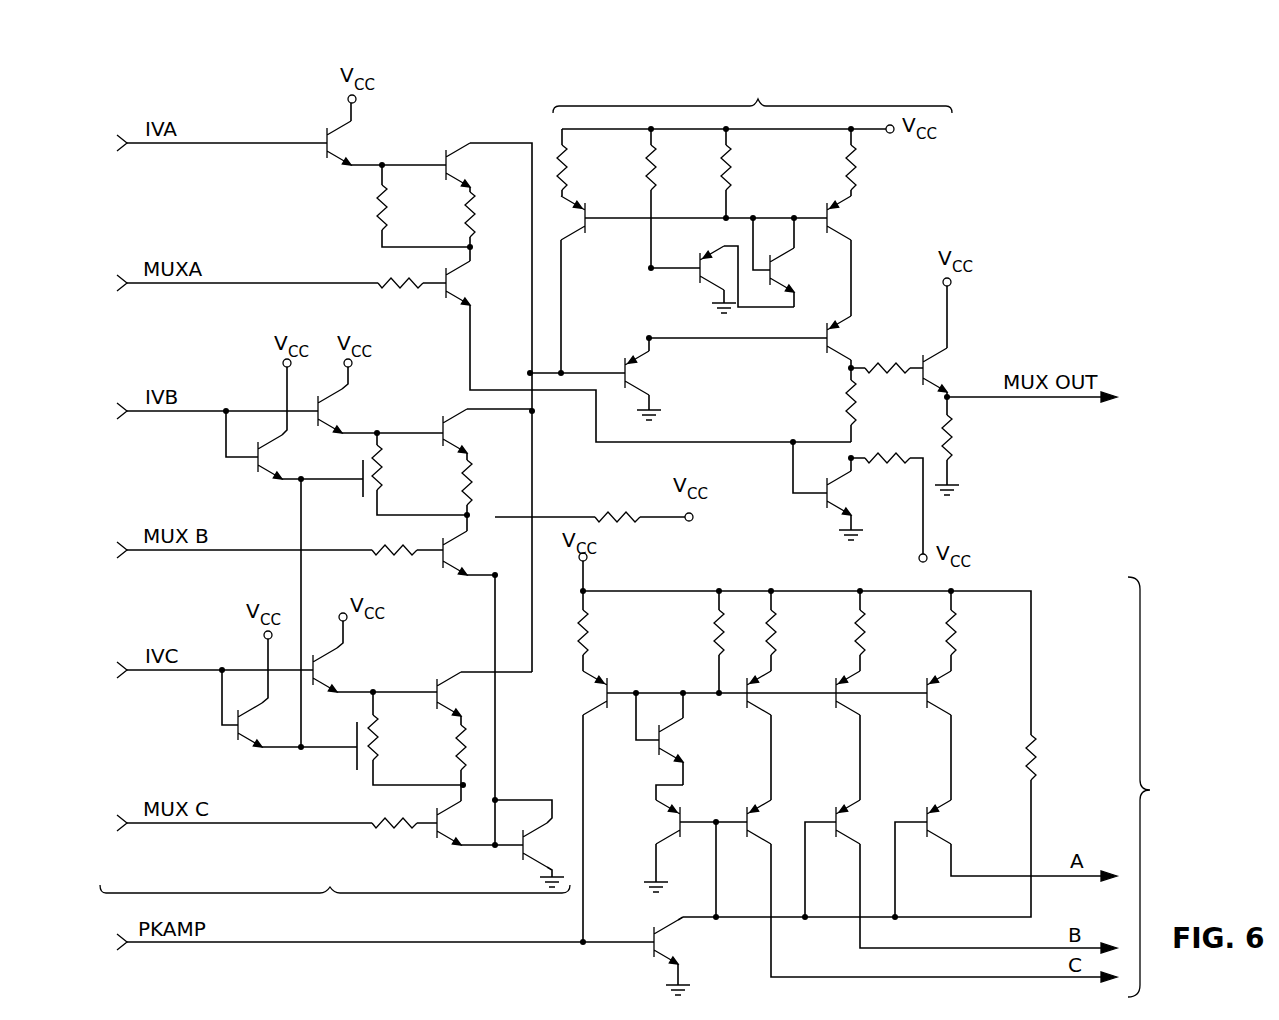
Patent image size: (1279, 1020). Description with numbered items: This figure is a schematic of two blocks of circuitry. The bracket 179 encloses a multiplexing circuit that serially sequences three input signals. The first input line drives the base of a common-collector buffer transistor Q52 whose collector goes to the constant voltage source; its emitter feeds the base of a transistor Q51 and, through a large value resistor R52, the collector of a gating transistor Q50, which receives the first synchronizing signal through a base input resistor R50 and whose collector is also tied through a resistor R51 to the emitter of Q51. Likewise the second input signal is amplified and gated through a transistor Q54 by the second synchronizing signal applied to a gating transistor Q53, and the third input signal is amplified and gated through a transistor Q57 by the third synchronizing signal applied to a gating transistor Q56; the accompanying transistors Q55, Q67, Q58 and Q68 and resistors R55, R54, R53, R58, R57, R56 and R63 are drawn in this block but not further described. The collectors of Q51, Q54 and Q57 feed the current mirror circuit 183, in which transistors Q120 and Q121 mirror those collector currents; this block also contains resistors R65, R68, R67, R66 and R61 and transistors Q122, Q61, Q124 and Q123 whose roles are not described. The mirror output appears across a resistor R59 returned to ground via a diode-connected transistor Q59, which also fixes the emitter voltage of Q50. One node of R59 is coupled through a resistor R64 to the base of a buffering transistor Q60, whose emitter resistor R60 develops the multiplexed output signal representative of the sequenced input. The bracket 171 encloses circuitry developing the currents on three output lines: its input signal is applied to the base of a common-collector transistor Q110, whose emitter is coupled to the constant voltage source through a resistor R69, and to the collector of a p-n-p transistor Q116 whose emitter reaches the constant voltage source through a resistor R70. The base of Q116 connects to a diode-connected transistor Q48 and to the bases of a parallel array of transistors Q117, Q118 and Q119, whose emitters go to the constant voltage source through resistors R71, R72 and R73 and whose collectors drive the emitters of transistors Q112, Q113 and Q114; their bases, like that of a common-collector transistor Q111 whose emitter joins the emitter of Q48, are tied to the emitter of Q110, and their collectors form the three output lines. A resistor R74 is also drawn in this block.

The buffer transistor Q52 is at (350, 139).
The transistor Q51 is at (470, 167).
The large value resistor R52 is at (386, 212).
The resistor R51 is at (474, 212).
The base input resistor R50 is at (384, 280).
The gating transistor Q50 is at (462, 286).
The current mirror circuit 183 is at (752, 92).
The resistor R65 is at (567, 168).
The resistor R68 is at (656, 168).
The resistor R67 is at (731, 168).
The resistor R66 is at (856, 168).
The transistor Q120 is at (564, 218).
The transistor Q121 is at (828, 222).
The transistor Q122 is at (697, 282).
The transistor Q61 is at (772, 272).
The transistor Q124 is at (830, 334).
The transistor Q123 is at (628, 370).
The resistor R59 is at (847, 392).
The resistor R64 is at (886, 373).
The buffering transistor Q60 is at (950, 362).
The resistor R60 is at (953, 438).
The resistor R61 is at (874, 455).
The diode-connected transistor Q59 is at (830, 498).
The transistor Q55 is at (330, 402).
The transistor Q67 is at (262, 455).
The resistor R55 is at (381, 476).
The transistor Q54 is at (455, 433).
The resistor R54 is at (471, 476).
The resistor R53 is at (386, 562).
The gating transistor Q53 is at (446, 556).
The resistor R63 is at (602, 508).
The transistor Q58 is at (325, 663).
The transistor Q68 is at (243, 737).
The transistor Q57 is at (452, 672).
The resistor R58 is at (377, 728).
The resistor R57 is at (458, 762).
The resistor R56 is at (378, 818).
The gating transistor Q56 is at (445, 838).
The multiplexing circuit 179 is at (335, 905).
The p-n-p transistor Q116 is at (605, 694).
The resistor R70 is at (588, 622).
The resistor R74 is at (715, 648).
The diode-connected transistor Q48 is at (662, 733).
The transistor Q117 is at (750, 690).
The resistor R71 is at (776, 622).
The transistor Q118 is at (840, 690).
The resistor R72 is at (865, 622).
The transistor Q119 is at (931, 690).
The resistor R73 is at (956, 622).
The resistor R69 is at (1038, 748).
The circuitry 171 is at (1161, 787).
The common-collector transistor Q111 is at (676, 824).
The transistor Q112 is at (749, 820).
The transistor Q113 is at (838, 820).
The transistor Q114 is at (929, 820).
The common-collector transistor Q110 is at (670, 937).